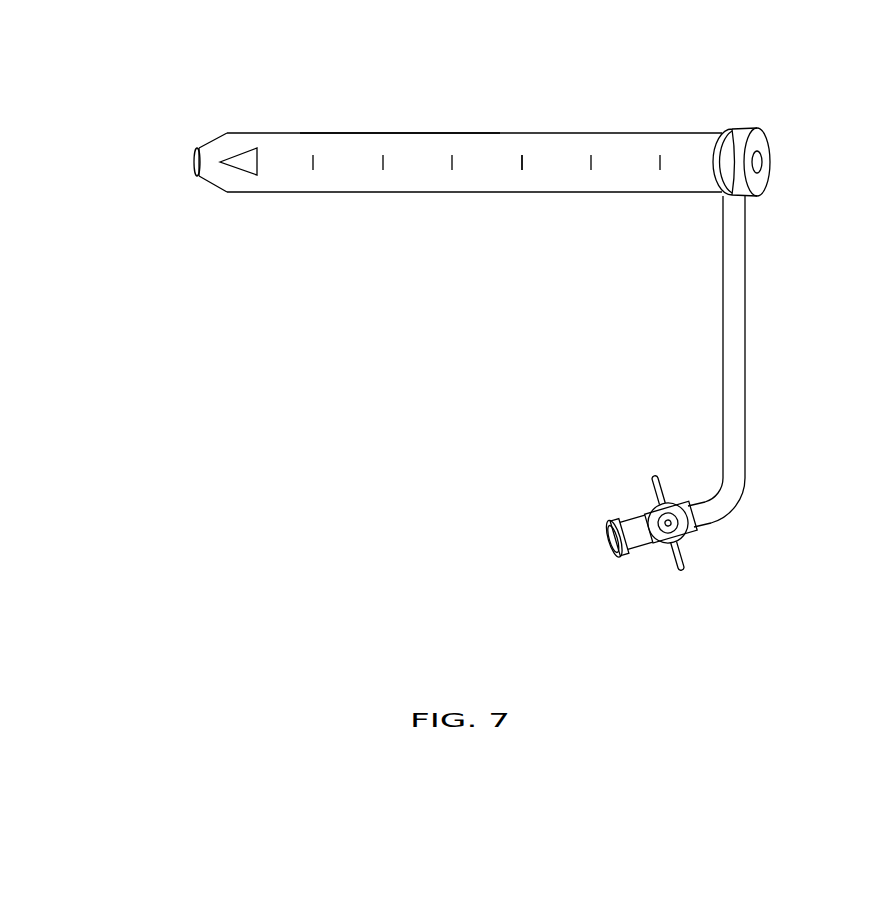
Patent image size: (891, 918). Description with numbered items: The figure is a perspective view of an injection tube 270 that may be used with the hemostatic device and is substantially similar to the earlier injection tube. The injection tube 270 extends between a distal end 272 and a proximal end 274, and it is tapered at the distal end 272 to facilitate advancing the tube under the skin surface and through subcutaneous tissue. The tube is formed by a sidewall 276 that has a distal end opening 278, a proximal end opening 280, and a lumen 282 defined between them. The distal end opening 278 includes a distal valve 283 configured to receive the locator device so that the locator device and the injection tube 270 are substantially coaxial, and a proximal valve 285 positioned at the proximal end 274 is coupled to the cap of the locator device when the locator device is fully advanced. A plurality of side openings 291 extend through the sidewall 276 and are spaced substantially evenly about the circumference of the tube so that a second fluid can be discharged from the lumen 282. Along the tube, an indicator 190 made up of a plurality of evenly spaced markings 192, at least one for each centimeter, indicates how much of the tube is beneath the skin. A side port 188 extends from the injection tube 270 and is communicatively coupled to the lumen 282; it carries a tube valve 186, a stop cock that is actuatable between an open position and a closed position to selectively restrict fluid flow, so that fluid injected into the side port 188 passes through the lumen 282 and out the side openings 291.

The injection tube 270 is at (432, 347).
The indicator 190 is at (395, 206).
The sidewall 276 is at (408, 155).
The distal end 272 is at (212, 197).
The distal valve 283 is at (196, 144).
The distal end opening 278 is at (194, 163).
The side openings 291 is at (262, 146).
The markings 192 is at (591, 172).
The lumen 282 is at (536, 157).
The proximal end 274 is at (772, 205).
The proximal valve 285 is at (741, 138).
The proximal end opening 280 is at (762, 163).
The tube valve 186 is at (647, 487).
The side port 188 is at (607, 567).